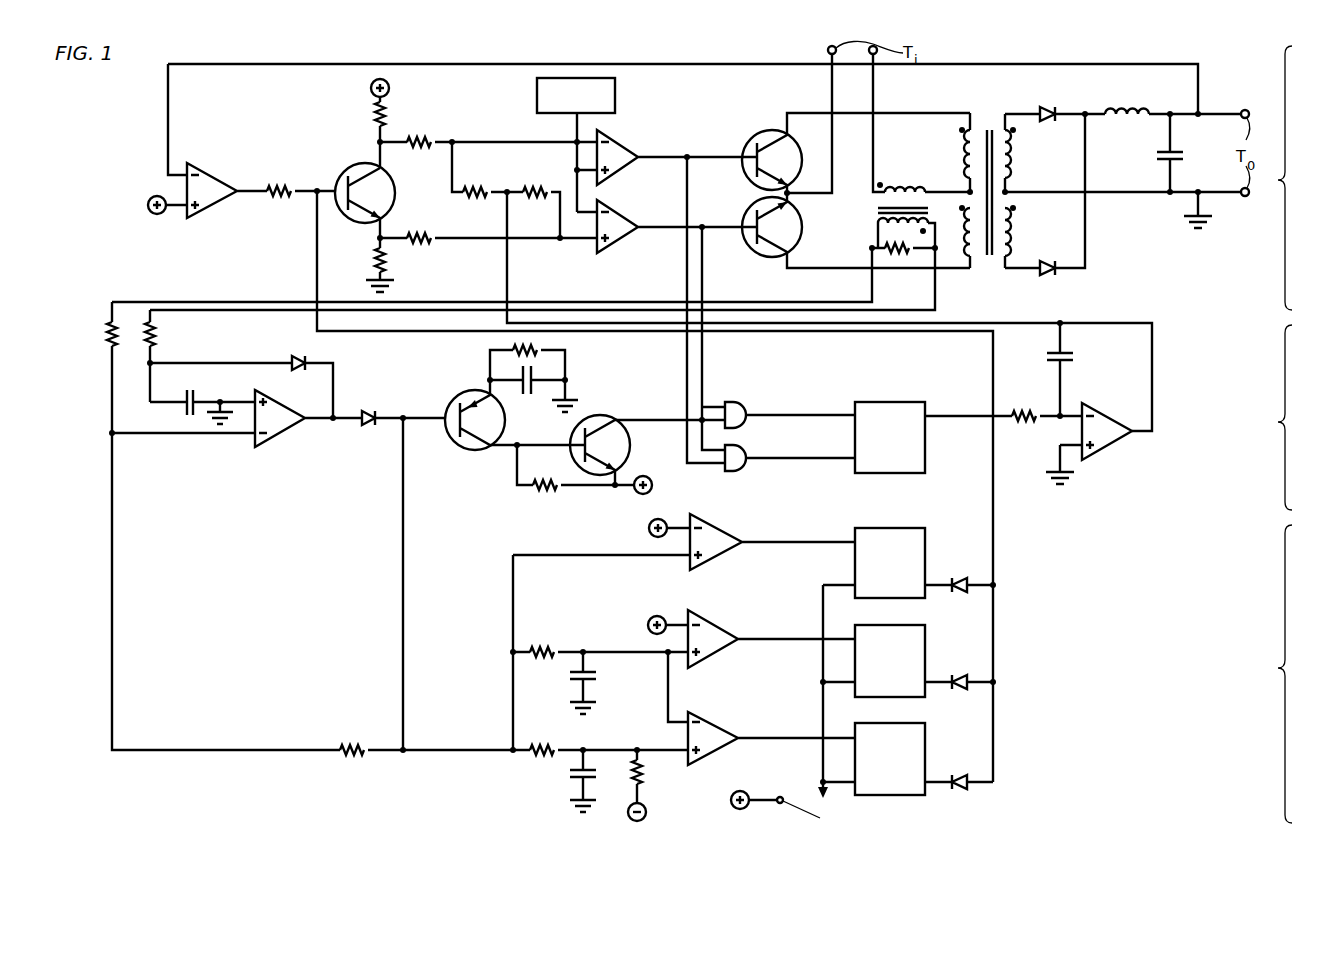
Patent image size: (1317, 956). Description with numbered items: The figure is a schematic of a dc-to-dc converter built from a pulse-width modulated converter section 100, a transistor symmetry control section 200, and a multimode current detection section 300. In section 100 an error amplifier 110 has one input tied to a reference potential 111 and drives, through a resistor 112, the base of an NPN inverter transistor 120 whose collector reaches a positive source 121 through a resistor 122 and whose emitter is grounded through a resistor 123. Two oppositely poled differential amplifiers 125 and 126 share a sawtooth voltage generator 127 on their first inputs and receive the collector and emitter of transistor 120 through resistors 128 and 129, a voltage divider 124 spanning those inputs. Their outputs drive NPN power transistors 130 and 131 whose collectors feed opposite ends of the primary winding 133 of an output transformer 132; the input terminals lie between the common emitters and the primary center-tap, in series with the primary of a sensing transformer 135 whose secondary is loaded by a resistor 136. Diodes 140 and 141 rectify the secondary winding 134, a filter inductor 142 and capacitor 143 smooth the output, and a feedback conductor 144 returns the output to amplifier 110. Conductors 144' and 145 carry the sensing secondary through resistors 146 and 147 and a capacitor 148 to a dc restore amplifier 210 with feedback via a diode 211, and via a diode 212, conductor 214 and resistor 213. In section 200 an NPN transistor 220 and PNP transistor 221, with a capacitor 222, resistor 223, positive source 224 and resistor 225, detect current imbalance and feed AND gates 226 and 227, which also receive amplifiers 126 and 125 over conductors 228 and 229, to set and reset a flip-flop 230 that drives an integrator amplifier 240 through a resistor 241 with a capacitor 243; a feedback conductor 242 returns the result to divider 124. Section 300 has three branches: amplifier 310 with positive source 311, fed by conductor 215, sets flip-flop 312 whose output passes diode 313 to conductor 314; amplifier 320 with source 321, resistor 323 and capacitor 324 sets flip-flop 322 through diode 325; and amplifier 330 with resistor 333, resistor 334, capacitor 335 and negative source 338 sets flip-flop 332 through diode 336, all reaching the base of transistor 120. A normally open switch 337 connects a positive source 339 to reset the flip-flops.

The pulse-width modulated converter section 100 is at (1316, 190).
The differential amplifier 110 is at (207, 186).
The source of reference potential 111 is at (148, 205).
The resistor 112 is at (272, 188).
The NPN inverter transistor 120 is at (344, 166).
The source of positive potential 121 is at (390, 84).
The resistor 122 is at (373, 121).
The resistor 123 is at (372, 268).
The voltage divider 124 is at (505, 188).
The second differential amplifier 125 is at (629, 150).
The second differential amplifier 126 is at (629, 220).
The sawtooth voltage generator 127 is at (618, 85).
The resistor 128 is at (413, 139).
The resistor 129 is at (413, 237).
The NPN power transistor 130 is at (749, 130).
The NPN power transistor 131 is at (751, 205).
The output transformer 132 is at (988, 125).
The primary winding 133 is at (957, 187).
The secondary winding 134 is at (1012, 180).
The sensing transformer 135 is at (874, 218).
The resistor 136 is at (872, 250).
The diode 140 is at (1047, 109).
The diode 141 is at (1047, 262).
The filter inductor 142 is at (1135, 109).
The capacitor 143 is at (1157, 155).
The feedback conductor 144 is at (683, 109).
The conductor 144' is at (492, 275).
The conductor 145 is at (658, 308).
The resistor 146 is at (105, 345).
The resistor 147 is at (156, 344).
The capacitor 148 is at (191, 390).
The transistor symmetry control section 200 is at (1316, 432).
The differential amplifier 210 is at (280, 437).
The diode 211 is at (298, 356).
The diode 212 is at (368, 411).
The resistor 213 is at (343, 742).
The conductor 214 is at (400, 574).
The conductor 215 is at (483, 748).
The NPN transistor 220 is at (452, 404).
The PNP transistor 221 is at (608, 417).
The capacitor 222 is at (518, 372).
The resistor 223 is at (543, 348).
The source of positive potential 224 is at (645, 476).
The resistor 225 is at (537, 478).
The AND gate 226 is at (738, 409).
The AND gate 227 is at (738, 453).
The conductor 228 is at (705, 350).
The conductor 229 is at (685, 355).
The flip-flop circuit 230 is at (920, 405).
The integrator differential amplifier 240 is at (1108, 417).
The resistor 241 is at (1019, 413).
The feedback conductor 242 is at (994, 322).
The capacitor 243 is at (1073, 356).
The multimode current detection section 300 is at (1316, 678).
The first differential amplifier 310 is at (704, 524).
The source of positive potential 311 is at (648, 528).
The first flip-flop 312 is at (920, 527).
The diode 313 is at (958, 578).
The conductor 314 is at (393, 333).
The second differential amplifier 320 is at (706, 623).
The source of positive potential 321 is at (648, 623).
The second flip-flop 322 is at (922, 624).
The resistor 323 is at (545, 647).
The capacitor 324 is at (570, 676).
The diode 325 is at (957, 677).
The third differential amplifier 330 is at (706, 725).
The third flip-flop 332 is at (922, 722).
The resistor 333 is at (546, 748).
The resistor 334 is at (646, 778).
The capacitor 335 is at (570, 775).
The diode 336 is at (957, 776).
The normally open switch 337 is at (793, 797).
The source of negative potential 338 is at (648, 813).
The source of positive potential 339 is at (738, 792).